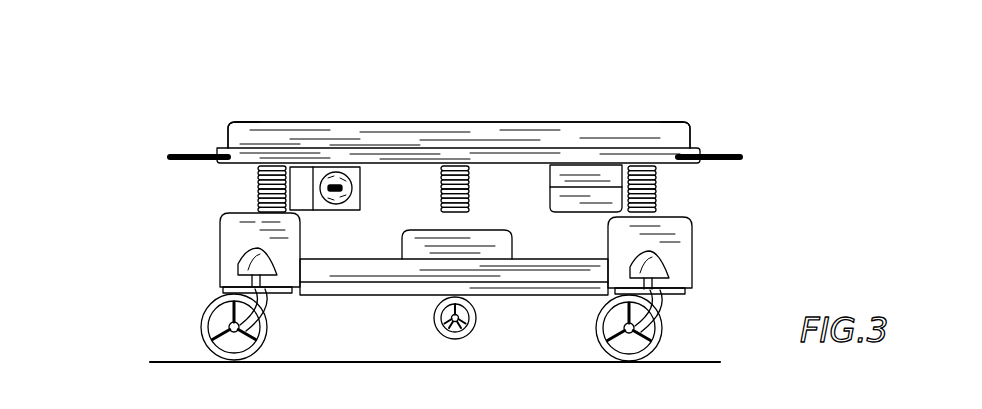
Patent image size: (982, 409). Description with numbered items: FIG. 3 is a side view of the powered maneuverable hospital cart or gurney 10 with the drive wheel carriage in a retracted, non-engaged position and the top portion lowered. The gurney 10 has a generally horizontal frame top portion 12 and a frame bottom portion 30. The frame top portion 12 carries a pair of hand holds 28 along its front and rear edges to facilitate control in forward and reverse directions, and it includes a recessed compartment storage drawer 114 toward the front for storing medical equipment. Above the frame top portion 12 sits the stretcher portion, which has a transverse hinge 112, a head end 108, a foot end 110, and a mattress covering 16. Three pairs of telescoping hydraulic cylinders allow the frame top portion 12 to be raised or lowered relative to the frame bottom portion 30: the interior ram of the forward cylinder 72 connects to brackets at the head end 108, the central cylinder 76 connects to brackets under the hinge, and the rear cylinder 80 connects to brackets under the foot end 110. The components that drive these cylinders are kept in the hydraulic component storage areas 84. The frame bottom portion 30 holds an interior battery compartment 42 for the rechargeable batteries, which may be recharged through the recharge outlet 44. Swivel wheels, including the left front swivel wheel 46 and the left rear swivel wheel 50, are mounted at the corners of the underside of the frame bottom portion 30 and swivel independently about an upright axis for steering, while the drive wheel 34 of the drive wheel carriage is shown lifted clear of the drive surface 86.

The hospital gurney 10 is at (134, 112).
The frame top portion 12 is at (242, 158).
The mattress covering 16 is at (334, 121).
The hand holds 28 is at (170, 155).
The frame bottom portion 30 is at (232, 273).
The drive wheel 34 is at (477, 318).
The battery compartment 42 is at (508, 272).
The recharge outlet 44 is at (352, 187).
The left front swivel wheel 46 is at (672, 330).
The left rear swivel wheel 50 is at (208, 318).
The forward cylinder 72 is at (657, 192).
The central cylinder 76 is at (470, 198).
The rear cylinder 80 is at (257, 195).
The hydraulic component storage area 84 is at (232, 236).
The drive surface 86 is at (195, 360).
The head end 108 is at (690, 120).
The foot end 110 is at (240, 121).
The transverse hinge 112 is at (457, 128).
The recessed compartment storage drawer 114 is at (568, 177).